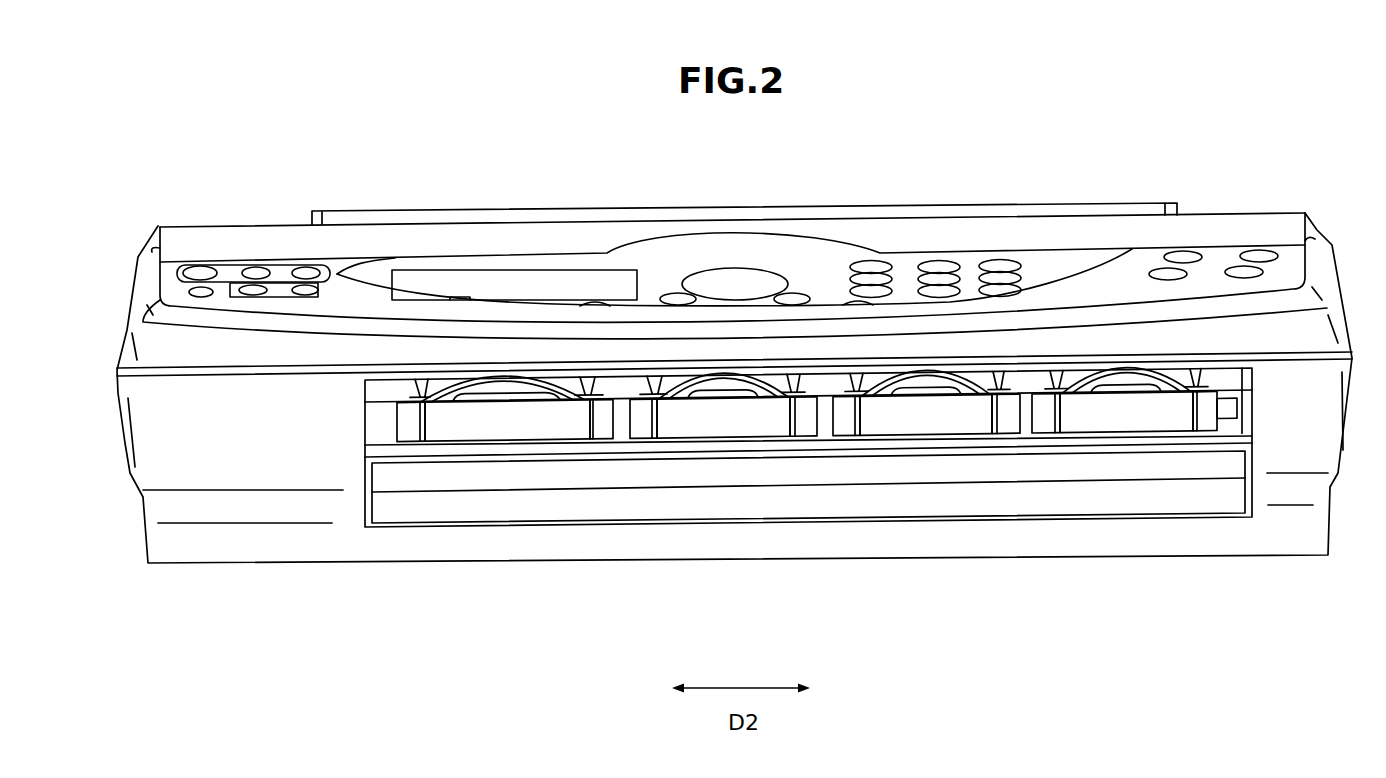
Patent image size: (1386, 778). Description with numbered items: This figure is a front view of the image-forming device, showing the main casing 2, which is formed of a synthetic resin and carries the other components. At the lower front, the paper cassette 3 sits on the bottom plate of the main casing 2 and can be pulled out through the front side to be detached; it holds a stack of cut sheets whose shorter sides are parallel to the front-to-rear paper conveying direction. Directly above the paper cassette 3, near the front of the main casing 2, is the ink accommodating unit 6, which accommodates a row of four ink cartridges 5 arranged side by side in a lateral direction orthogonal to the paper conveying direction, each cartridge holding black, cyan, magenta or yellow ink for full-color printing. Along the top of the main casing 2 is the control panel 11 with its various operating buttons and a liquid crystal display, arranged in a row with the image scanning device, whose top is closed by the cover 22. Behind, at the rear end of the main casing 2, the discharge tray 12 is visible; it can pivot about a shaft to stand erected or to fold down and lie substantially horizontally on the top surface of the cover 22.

The main casing 2 is at (133, 482).
The paper cassette 3 is at (642, 508).
The ink cartridges 5 is at (808, 498).
The ink accommodating unit 6 is at (365, 437).
The control panel 11 is at (598, 280).
The discharge tray 12 is at (728, 210).
The cover 22 is at (930, 240).